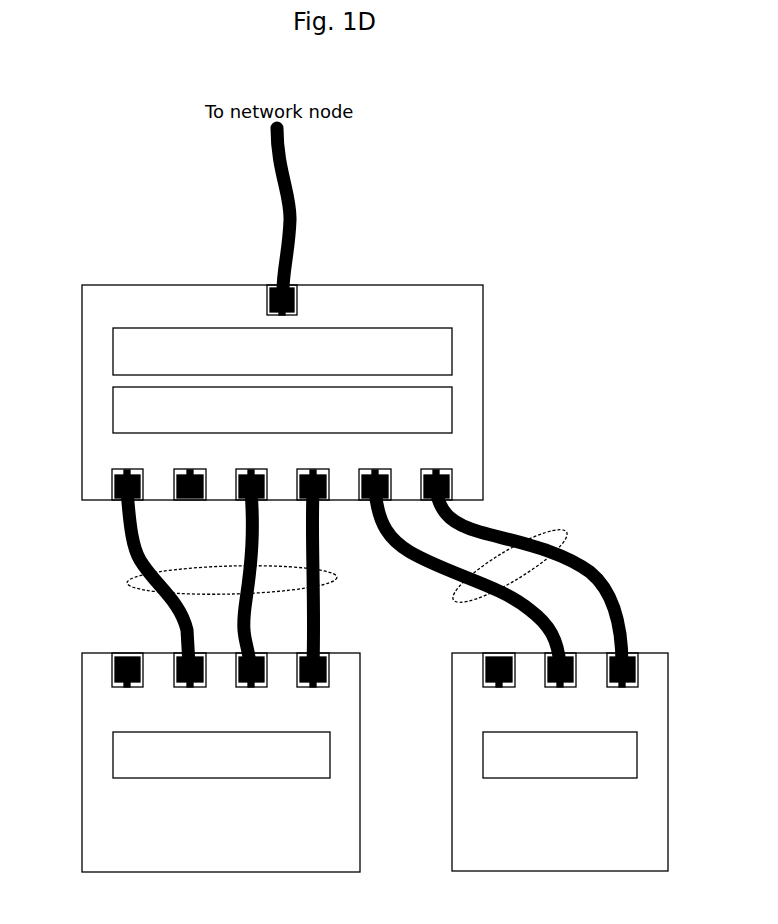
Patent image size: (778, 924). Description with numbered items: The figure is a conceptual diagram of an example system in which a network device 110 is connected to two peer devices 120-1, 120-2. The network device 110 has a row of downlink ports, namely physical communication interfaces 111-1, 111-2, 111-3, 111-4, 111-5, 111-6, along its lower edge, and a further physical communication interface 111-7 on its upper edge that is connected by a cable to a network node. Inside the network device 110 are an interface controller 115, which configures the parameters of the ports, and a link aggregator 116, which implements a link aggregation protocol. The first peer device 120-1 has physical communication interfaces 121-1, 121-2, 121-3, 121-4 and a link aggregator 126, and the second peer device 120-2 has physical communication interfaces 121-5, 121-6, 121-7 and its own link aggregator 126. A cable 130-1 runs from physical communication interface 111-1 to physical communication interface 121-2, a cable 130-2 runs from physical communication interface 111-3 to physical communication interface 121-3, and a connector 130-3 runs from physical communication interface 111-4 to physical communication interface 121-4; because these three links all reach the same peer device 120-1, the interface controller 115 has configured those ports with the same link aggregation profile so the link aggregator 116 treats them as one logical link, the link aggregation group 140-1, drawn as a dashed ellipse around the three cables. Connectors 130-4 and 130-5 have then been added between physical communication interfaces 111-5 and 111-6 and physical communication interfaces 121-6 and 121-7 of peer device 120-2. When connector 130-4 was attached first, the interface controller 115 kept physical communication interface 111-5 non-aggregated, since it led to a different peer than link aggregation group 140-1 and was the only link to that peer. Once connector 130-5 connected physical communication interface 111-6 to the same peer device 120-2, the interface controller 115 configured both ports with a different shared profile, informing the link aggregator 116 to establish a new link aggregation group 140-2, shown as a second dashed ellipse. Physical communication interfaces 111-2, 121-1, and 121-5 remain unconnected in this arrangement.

The network device 110 is at (80, 340).
The interface controller 115 is at (282, 351).
The link aggregator 116 is at (282, 410).
The physical communication interface 111-1 is at (126, 470).
The physical communication interface 111-2 is at (189, 470).
The physical communication interface 111-3 is at (250, 470).
The physical communication interface 111-4 is at (312, 470).
The physical communication interface 111-5 is at (374, 470).
The physical communication interface 111-6 is at (436, 470).
The physical communication interface 111-7 is at (266, 297).
The peer device 120-1 is at (80, 765).
The peer device 120-2 is at (450, 790).
The physical communication interface 121-1 is at (128, 688).
The physical communication interface 121-2 is at (190, 688).
The physical communication interface 121-3 is at (252, 688).
The physical communication interface 121-4 is at (314, 688).
The physical communication interface 121-5 is at (499, 688).
The physical communication interface 121-6 is at (560, 688).
The physical communication interface 121-7 is at (622, 688).
The link aggregator 126 is at (375, 755).
The cable 130-1 is at (128, 548).
The cable 130-2 is at (246, 532).
The connector 130-3 is at (321, 620).
The connector 130-4 is at (527, 612).
The connector 130-5 is at (608, 578).
The link aggregation group 140-1 is at (334, 577).
The link aggregation group 140-2 is at (565, 537).